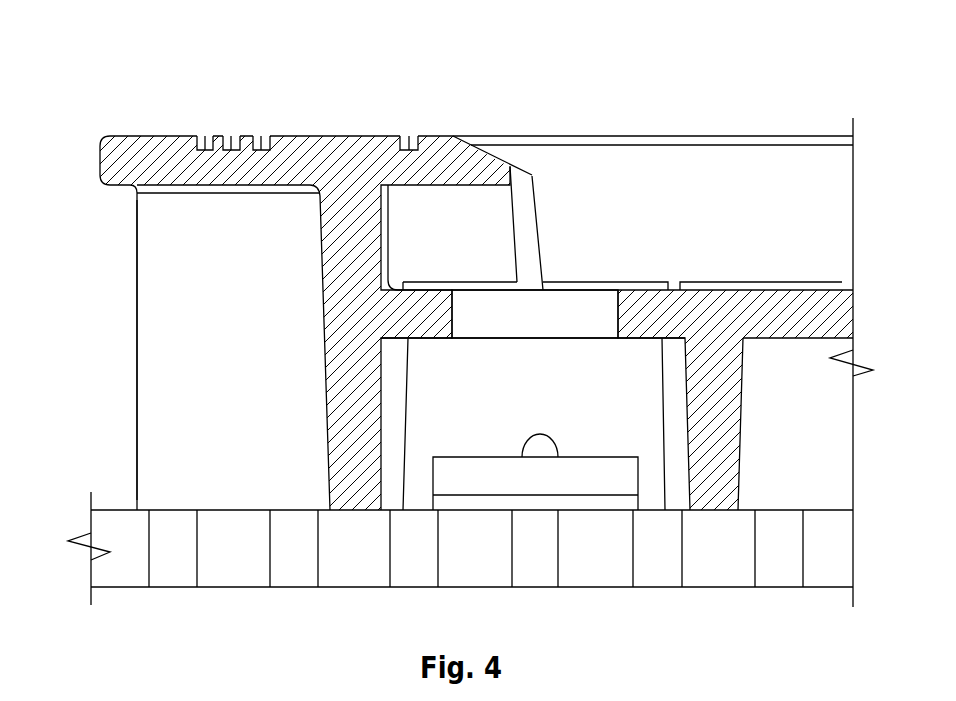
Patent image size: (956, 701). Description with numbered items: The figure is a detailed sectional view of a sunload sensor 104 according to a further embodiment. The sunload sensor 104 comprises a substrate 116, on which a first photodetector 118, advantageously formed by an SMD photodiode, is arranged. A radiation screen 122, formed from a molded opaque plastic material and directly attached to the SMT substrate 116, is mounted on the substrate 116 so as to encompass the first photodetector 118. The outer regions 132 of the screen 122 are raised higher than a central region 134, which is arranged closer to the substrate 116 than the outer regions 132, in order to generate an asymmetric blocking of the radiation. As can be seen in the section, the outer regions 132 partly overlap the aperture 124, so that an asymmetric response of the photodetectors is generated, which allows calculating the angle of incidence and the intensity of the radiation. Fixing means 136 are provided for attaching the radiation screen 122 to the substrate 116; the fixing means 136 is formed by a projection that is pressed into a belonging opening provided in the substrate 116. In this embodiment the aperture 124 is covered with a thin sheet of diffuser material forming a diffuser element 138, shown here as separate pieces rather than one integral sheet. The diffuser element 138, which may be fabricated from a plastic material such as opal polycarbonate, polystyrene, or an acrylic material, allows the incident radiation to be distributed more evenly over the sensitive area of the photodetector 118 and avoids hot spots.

The sunload sensor 104 is at (112, 49).
The substrate 116 is at (342, 565).
The first photodetector 118 is at (522, 458).
The radiation screen 122 is at (137, 280).
The aperture 124 is at (583, 315).
The outer regions 132 is at (325, 143).
The central region 134 is at (842, 290).
The fixing means 136 is at (137, 238).
The diffuser element 138 is at (645, 287).